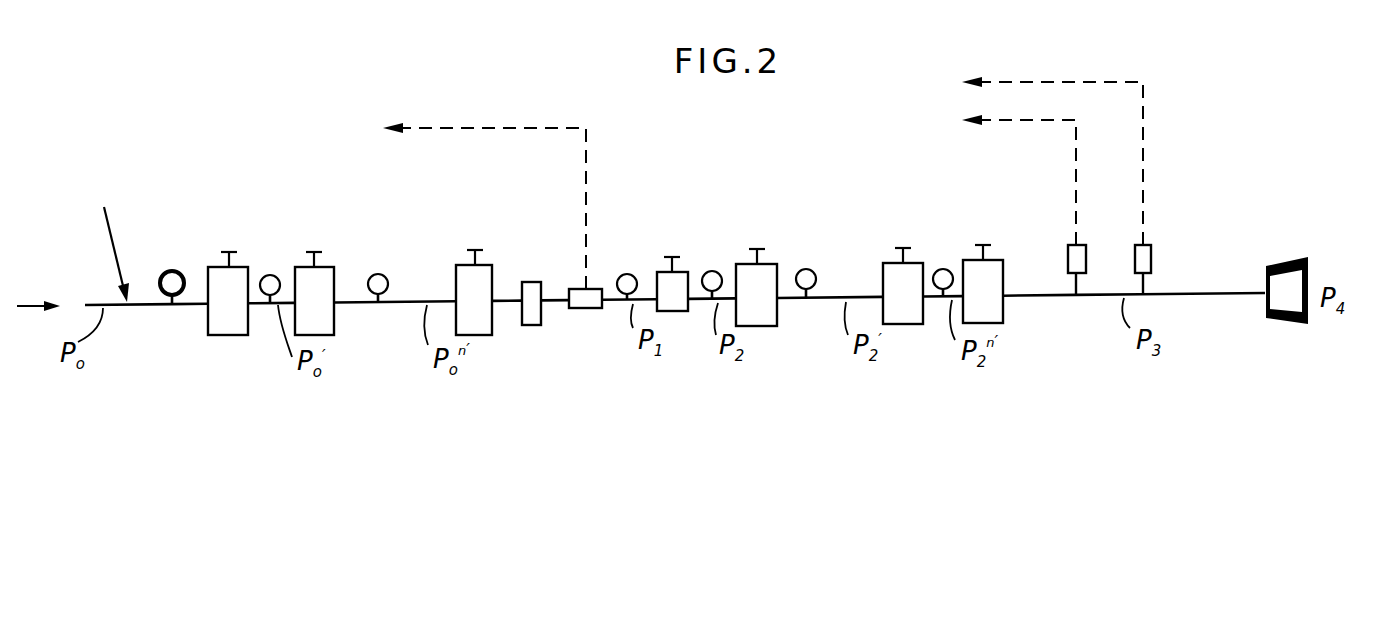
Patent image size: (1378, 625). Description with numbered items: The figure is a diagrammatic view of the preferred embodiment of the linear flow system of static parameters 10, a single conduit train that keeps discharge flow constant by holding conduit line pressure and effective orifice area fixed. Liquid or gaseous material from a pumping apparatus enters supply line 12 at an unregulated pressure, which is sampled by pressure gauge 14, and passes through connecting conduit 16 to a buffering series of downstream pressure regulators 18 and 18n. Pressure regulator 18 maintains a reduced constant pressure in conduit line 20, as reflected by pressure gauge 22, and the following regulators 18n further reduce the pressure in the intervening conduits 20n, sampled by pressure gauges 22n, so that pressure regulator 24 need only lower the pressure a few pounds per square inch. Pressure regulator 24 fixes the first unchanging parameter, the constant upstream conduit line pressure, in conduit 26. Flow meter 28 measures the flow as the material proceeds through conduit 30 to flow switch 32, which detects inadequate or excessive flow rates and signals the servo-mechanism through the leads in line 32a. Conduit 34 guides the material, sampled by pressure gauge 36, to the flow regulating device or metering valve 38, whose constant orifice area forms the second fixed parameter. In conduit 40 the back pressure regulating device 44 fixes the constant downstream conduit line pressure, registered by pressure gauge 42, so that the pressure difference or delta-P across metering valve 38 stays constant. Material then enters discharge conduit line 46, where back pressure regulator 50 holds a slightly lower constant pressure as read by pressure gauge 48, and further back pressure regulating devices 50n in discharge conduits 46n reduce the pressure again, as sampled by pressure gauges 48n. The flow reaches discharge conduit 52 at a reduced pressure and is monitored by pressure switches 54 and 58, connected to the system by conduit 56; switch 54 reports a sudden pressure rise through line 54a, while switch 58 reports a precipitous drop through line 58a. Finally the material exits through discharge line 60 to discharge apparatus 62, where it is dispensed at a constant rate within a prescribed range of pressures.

The linear flow system of static parameters 10 is at (104, 240).
The supply line 12 is at (137, 306).
The pressure gauge 14 is at (174, 270).
The connecting conduit 16 is at (185, 305).
The downstream pressure regulator 18 is at (233, 283).
The downstream pressure regulator 18n is at (315, 298).
The conduit line 20 is at (258, 305).
The intervening conduit 20n is at (352, 304).
The pressure gauge 22 is at (272, 274).
The pressure gauge 22n is at (380, 273).
The pressure regulator 24 is at (478, 290).
The conduit 26 is at (503, 303).
The flow meter 28 is at (530, 295).
The conduit 30 is at (555, 302).
The flow switch 32 is at (595, 292).
The line 32a is at (484, 195).
The conduit 34 is at (612, 302).
The pressure gauge 36 is at (632, 273).
The flow regulating device 38 is at (673, 287).
The conduit 40 is at (697, 301).
The pressure gauge 42 is at (716, 270).
The back pressure regulating device 44 is at (762, 283).
The discharge conduit line 46 is at (792, 300).
The discharge conduit 46n is at (932, 298).
The pressure gauge 48 is at (810, 268).
The pressure gauge 48n is at (947, 268).
The back pressure regulator 50 is at (913, 280).
The back pressure regulating device 50n is at (990, 278).
The discharge conduit 52 is at (1023, 297).
The pressure switch 54 is at (1080, 258).
The line 54a is at (1019, 171).
The conduit 56 is at (1100, 296).
The pressure switch 58 is at (1144, 258).
The line 58a is at (1052, 152).
The discharge line 60 is at (1172, 295).
The discharge apparatus 62 is at (1283, 282).